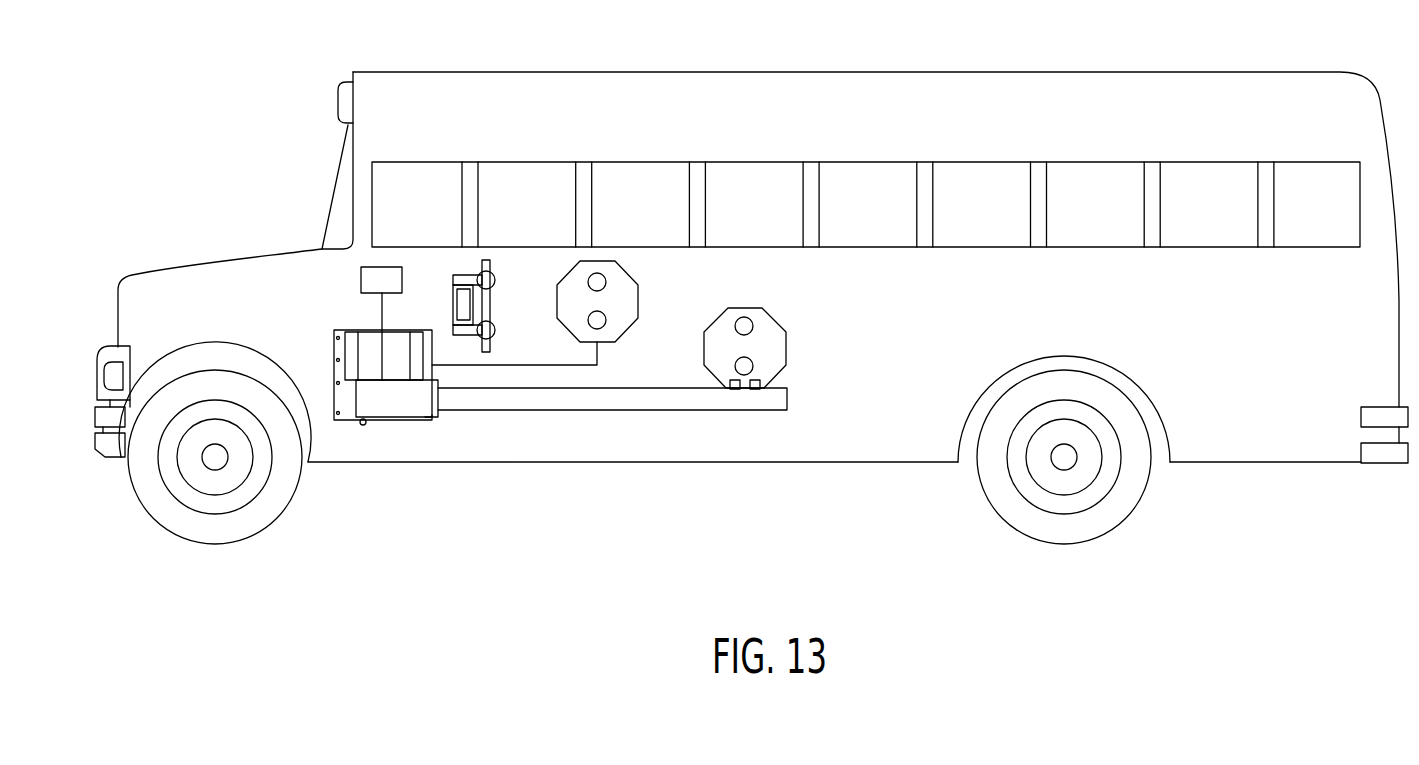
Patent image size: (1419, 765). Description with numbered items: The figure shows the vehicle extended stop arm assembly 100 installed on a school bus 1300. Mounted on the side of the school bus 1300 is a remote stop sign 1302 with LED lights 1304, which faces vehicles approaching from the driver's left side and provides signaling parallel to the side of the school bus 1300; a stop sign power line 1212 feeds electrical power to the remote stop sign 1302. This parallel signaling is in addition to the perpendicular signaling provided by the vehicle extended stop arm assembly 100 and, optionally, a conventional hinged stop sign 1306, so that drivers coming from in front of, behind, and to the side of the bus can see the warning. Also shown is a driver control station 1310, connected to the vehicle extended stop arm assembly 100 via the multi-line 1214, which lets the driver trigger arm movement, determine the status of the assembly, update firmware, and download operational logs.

The vehicle extended stop arm assembly 100 is at (395, 425).
The stop sign power line 1212 is at (530, 365).
The multi-line 1214 is at (380, 306).
The school bus 1300 is at (1236, 329).
The remote stop sign 1302 is at (628, 272).
The LED lights 1304 is at (597, 282).
The conventional hinged stop sign 1306 is at (492, 297).
The driver control station 1310 is at (361, 279).